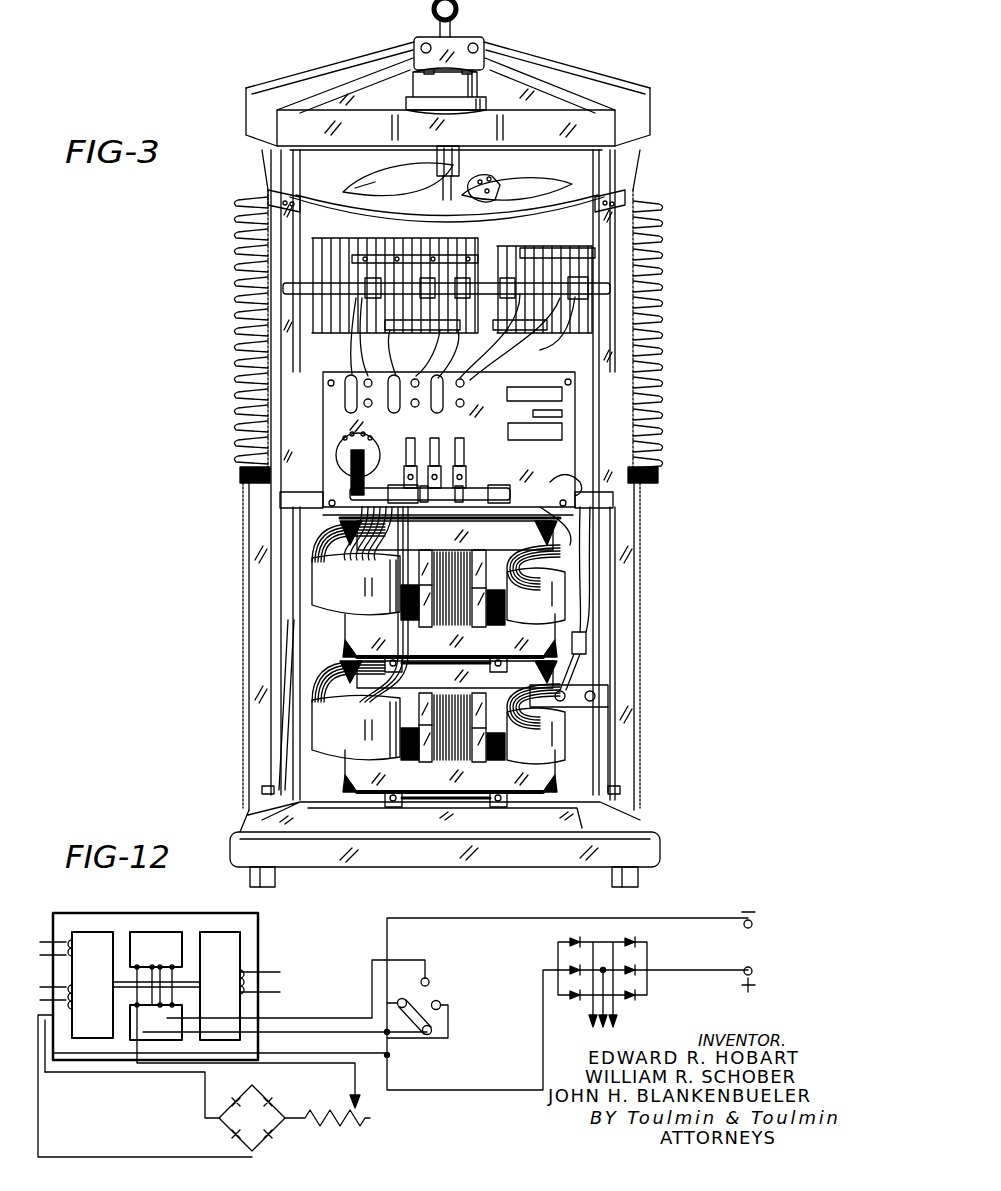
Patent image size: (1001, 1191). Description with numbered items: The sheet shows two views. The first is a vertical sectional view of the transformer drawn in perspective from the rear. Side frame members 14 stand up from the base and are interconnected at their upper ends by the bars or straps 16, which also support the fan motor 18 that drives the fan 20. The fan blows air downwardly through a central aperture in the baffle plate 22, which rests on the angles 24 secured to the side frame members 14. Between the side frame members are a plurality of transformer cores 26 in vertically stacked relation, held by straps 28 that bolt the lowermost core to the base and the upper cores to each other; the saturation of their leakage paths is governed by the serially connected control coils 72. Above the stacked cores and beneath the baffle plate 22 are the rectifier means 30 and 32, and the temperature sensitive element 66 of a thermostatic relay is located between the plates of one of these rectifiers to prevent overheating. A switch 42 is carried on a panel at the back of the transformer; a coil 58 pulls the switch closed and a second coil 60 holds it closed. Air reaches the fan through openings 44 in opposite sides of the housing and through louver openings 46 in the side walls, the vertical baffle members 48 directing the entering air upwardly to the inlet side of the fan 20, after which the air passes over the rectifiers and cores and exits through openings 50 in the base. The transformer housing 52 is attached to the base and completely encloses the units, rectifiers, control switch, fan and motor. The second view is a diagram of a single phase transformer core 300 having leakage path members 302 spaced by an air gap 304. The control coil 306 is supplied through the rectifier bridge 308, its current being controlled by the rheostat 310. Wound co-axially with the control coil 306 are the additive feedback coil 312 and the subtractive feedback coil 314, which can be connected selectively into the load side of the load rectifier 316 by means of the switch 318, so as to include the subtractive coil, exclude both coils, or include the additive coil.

In FIG. 3, the side frame members 14 is at (270, 184).
In FIG. 3, the bars or straps 16 is at (585, 122).
In FIG. 3, the fan motor 18 is at (483, 58).
In FIG. 3, the fan 20 is at (523, 180).
In FIG. 3, the baffle plate 22 is at (407, 213).
In FIG. 3, the angles 24 is at (262, 218).
In FIG. 3, the transformer cores 26 is at (545, 633).
In FIG. 3, the straps 28 is at (590, 530).
In FIG. 3, the rectifier means 30 is at (595, 240).
In FIG. 3, the rectifier means 32 is at (313, 250).
In FIG. 3, the switch 42 is at (350, 494).
In FIG. 3, the openings 44 is at (262, 150).
In FIG. 3, the louver openings 46 is at (238, 370).
In FIG. 3, the vertical baffle members 48 is at (262, 432).
In FIG. 3, the openings 50 is at (562, 817).
In FIG. 3, the transformer housing 52 is at (645, 596).
In FIG. 3, the coil 58 is at (336, 456).
In FIG. 3, the second coil 60 is at (287, 472).
In FIG. 3, the temperature sensitive element 66 is at (600, 276).
In FIG. 3, the control coils 72 is at (452, 615).
In FIG. 12, the transformer core 300 is at (258, 915).
In FIG. 12, the leakage path members 302 is at (112, 952).
In FIG. 12, the air gap 304 is at (200, 985).
In FIG. 12, the control coil 306 is at (137, 965).
In FIG. 12, the rectifier bridge 308 is at (240, 1110).
In FIG. 12, the rheostat 310 is at (340, 1124).
In FIG. 12, the additive feedback coil 312 is at (160, 965).
In FIG. 12, the subtractive feedback coil 314 is at (185, 968).
In FIG. 12, the load rectifier 316 is at (641, 960).
In FIG. 12, the switch 318 is at (430, 1002).